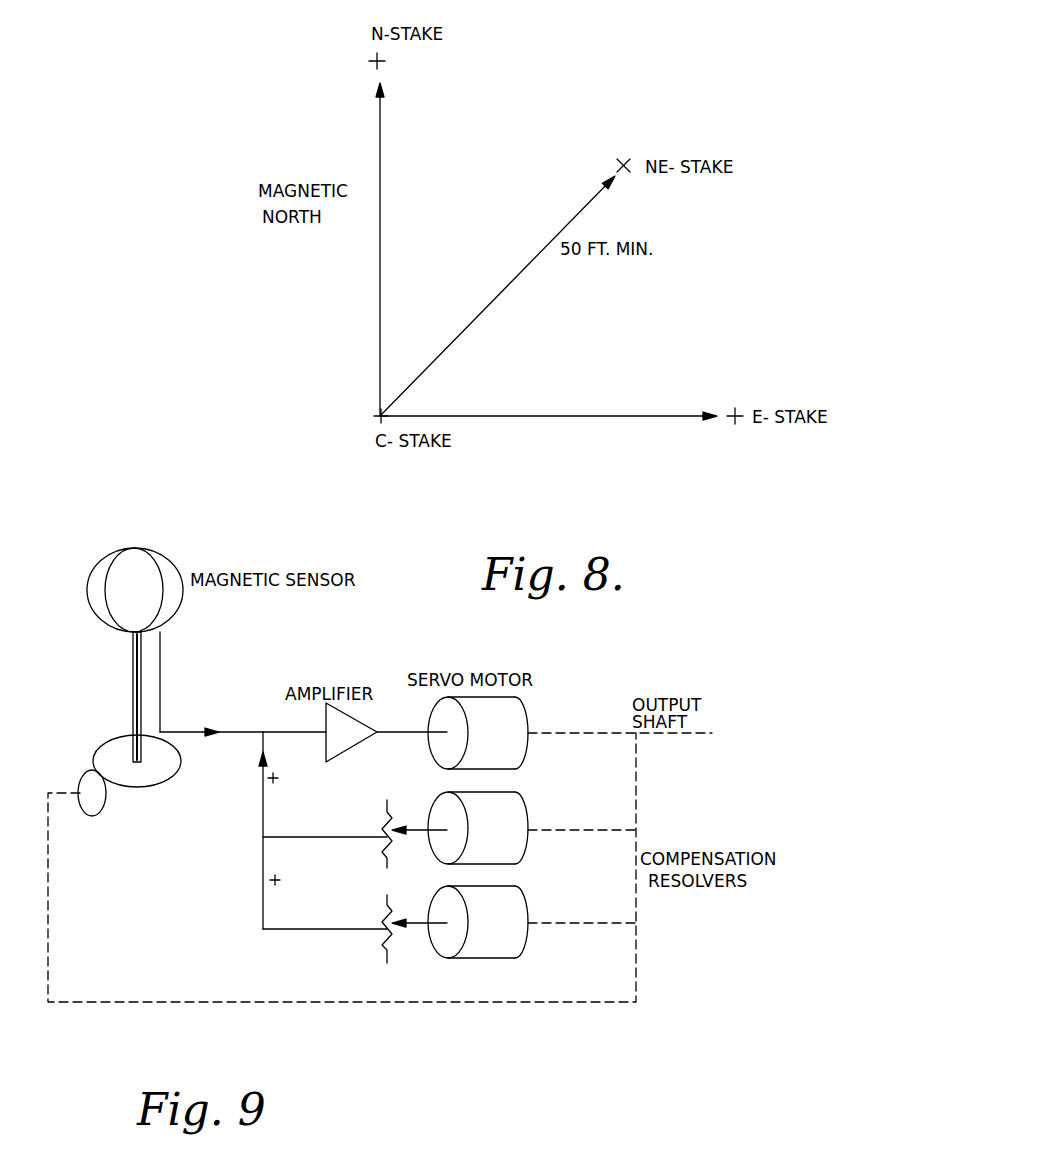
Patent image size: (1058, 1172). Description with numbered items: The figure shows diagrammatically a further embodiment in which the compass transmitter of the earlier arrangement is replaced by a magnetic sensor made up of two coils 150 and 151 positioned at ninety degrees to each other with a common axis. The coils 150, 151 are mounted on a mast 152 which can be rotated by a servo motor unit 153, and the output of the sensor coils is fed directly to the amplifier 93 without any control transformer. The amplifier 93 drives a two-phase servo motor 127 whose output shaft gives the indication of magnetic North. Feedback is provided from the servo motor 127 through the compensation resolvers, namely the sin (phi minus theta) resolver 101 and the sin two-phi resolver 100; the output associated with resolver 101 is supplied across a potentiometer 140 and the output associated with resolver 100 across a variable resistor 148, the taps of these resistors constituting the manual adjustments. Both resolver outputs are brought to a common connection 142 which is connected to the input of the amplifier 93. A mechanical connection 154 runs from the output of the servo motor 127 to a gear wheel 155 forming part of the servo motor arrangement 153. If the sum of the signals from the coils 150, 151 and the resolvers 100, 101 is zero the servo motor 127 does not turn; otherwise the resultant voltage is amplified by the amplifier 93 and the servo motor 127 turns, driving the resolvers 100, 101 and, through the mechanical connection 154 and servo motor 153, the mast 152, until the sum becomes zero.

The coil 150 is at (158, 553).
The coil 151 is at (164, 612).
The mast 152 is at (133, 677).
The servo motor unit 153 is at (138, 784).
The gear wheel 155 is at (80, 787).
The mechanical connection 154 is at (166, 1002).
The common connection 142 is at (263, 790).
The amplifier 93 is at (355, 711).
The servo motor 127 is at (528, 709).
The resolver unit 101 is at (528, 805).
The sin 2 phi resolver 100 is at (528, 898).
The potentiometer 140 is at (384, 849).
The variable resistor 148 is at (383, 941).